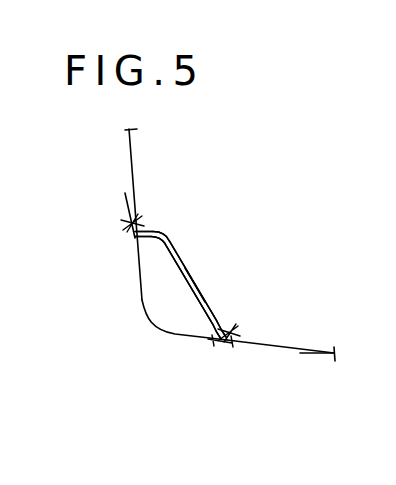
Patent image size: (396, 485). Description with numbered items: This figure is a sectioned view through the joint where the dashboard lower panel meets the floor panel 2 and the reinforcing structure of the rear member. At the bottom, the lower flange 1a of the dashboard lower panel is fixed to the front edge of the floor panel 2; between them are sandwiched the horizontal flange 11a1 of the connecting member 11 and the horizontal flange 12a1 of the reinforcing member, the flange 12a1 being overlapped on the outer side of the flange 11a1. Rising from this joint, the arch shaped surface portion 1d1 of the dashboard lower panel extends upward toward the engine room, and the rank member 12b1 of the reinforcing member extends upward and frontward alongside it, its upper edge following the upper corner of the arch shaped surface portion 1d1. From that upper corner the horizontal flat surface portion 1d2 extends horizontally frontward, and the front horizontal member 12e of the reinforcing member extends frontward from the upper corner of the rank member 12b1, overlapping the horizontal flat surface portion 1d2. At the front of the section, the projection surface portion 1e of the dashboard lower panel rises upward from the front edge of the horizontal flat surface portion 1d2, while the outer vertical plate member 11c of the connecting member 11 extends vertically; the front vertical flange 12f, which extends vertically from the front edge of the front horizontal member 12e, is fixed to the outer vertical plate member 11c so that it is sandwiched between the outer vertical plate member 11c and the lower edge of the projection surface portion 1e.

The projection surface portion 1e is at (134, 165).
The lower flange 1a is at (231, 333).
The arch shaped surface portion 1d1 is at (194, 274).
The horizontal flat surface portion 1d2 is at (162, 237).
The floor panel 2 is at (298, 354).
The connecting member 11 is at (148, 314).
The outer vertical plate member 11c is at (126, 205).
The horizontal flange 11a1 is at (216, 343).
The front horizontal member 12e is at (151, 243).
The front vertical flange 12f is at (131, 239).
The rank member 12b1 is at (193, 276).
The horizontal flange 12a1 is at (229, 347).